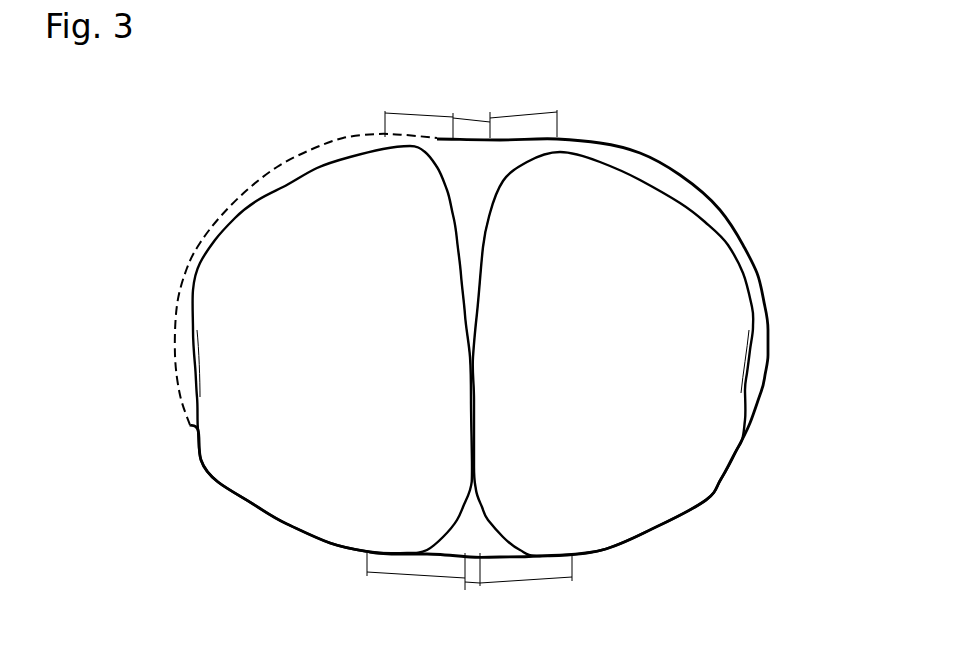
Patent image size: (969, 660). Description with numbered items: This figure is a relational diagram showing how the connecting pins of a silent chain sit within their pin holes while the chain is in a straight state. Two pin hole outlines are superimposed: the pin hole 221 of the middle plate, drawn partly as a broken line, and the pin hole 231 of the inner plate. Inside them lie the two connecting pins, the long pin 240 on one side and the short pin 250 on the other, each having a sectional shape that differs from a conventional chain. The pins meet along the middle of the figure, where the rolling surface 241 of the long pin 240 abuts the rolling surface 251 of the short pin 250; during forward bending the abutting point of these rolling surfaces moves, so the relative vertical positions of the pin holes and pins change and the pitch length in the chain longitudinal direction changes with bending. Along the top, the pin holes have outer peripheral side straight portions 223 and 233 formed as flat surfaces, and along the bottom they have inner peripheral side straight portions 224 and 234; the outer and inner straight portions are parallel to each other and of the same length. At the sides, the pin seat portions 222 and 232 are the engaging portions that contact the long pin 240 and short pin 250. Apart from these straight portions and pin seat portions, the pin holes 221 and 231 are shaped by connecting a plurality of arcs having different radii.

The pin hole of the middle plate 221 is at (207, 242).
The pin hole of the inner plate 231 is at (765, 298).
The short pin 250 is at (323, 240).
The rolling surface of the short pin 251 is at (448, 200).
The long pin 240 is at (600, 262).
The rolling surface of the long pin 241 is at (492, 188).
The pin seat portion 232 is at (197, 362).
The pin seat portion 222 is at (746, 352).
The outer peripheral side straight portion 223 is at (437, 112).
The outer peripheral side straight portion 233 is at (523, 113).
The inner peripheral side straight portion 224 is at (423, 575).
The inner peripheral side straight portion 234 is at (526, 580).